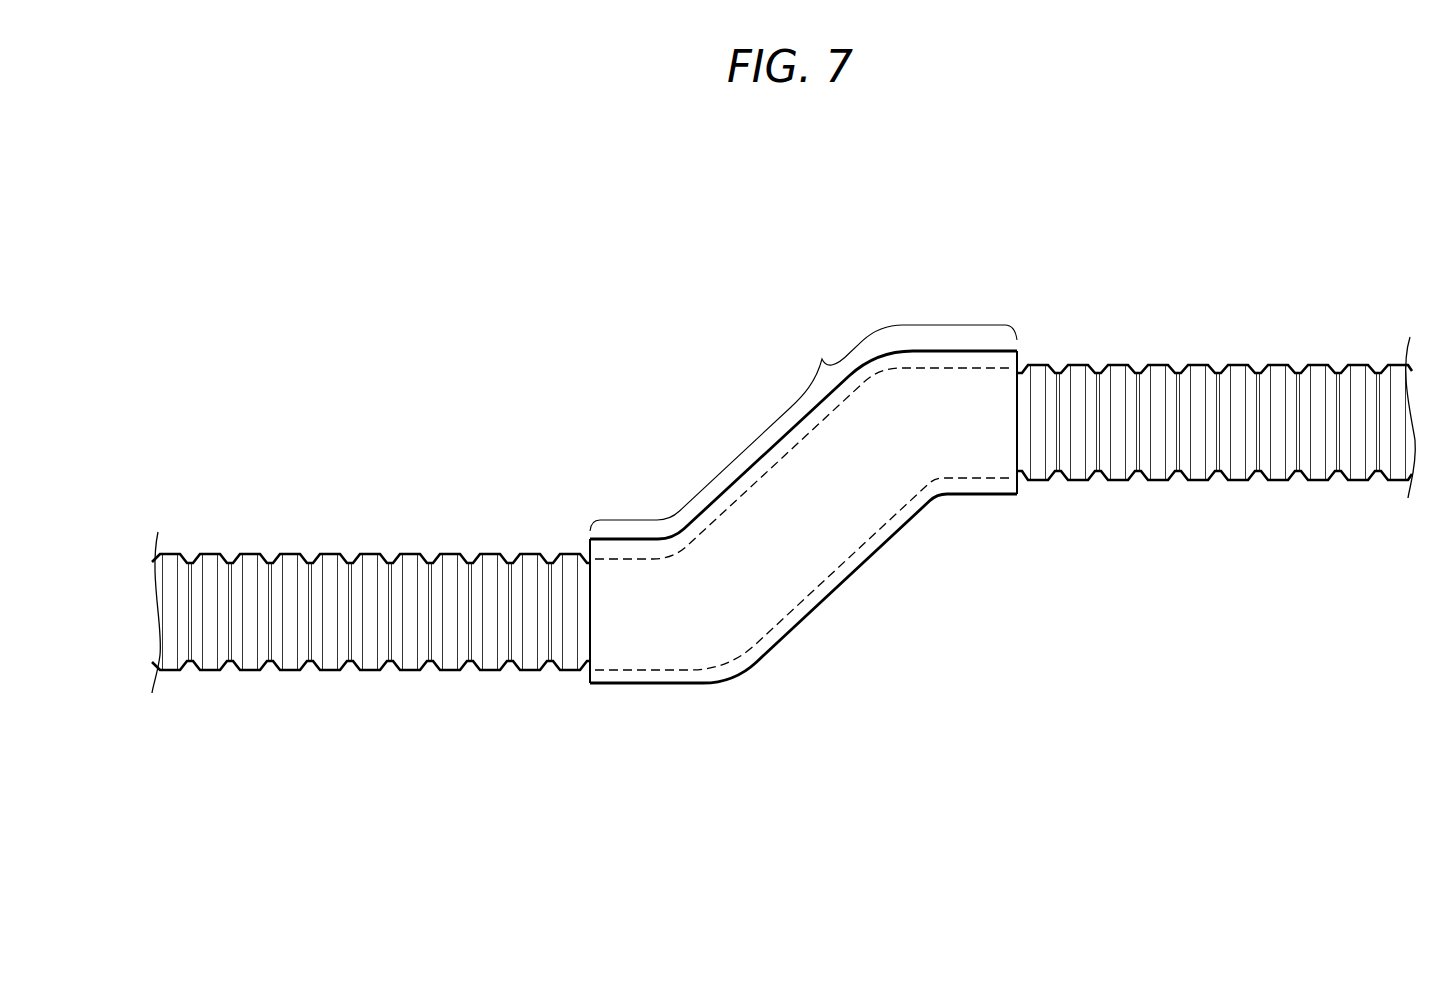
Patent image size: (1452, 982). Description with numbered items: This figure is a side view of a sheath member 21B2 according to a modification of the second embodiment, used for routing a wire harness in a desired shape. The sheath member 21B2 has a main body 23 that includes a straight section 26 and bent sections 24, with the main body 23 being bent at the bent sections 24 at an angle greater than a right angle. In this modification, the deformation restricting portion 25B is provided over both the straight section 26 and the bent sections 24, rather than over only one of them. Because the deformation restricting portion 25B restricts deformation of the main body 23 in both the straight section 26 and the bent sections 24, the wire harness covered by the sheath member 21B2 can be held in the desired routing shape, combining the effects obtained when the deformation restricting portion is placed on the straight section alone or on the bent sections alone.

The main body 23 is at (328, 554).
The sheath member 21B2 is at (850, 458).
The deformation restricting portion 25B is at (783, 437).
The bent sections 24 is at (699, 640).
The straight section 26 is at (832, 538).